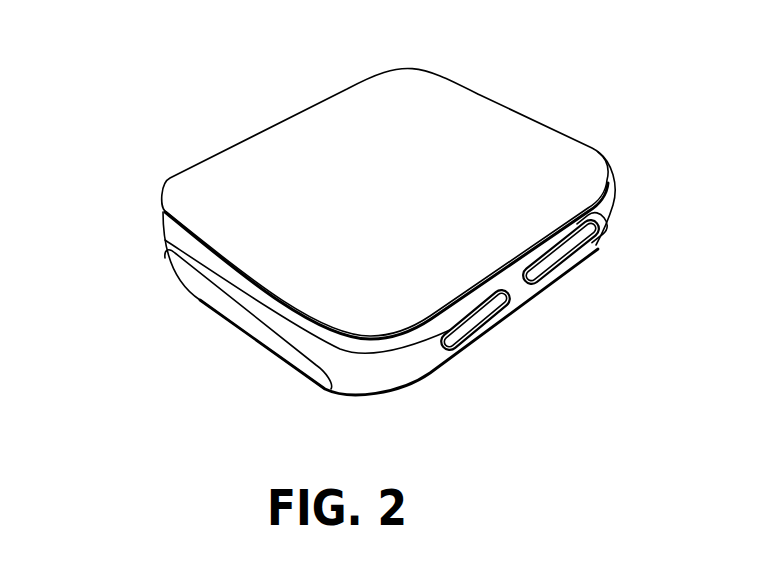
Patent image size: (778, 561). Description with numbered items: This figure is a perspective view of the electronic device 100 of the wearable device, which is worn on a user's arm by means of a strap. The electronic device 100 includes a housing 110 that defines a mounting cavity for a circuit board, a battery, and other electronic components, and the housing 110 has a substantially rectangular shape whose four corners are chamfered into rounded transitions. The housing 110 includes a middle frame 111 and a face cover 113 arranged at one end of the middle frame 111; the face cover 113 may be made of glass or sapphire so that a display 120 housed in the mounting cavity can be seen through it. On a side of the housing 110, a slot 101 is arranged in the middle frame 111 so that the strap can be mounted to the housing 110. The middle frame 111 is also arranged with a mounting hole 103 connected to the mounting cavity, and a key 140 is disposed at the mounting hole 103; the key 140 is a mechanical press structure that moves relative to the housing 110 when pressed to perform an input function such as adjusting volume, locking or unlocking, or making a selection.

The electronic device 100 is at (282, 140).
The display 120 is at (372, 121).
The face cover 113 is at (208, 178).
The housing 110 is at (165, 243).
The middle frame 111 is at (362, 384).
The slot 101 is at (254, 322).
The key 140 is at (568, 256).
The mounting hole 103 is at (594, 242).